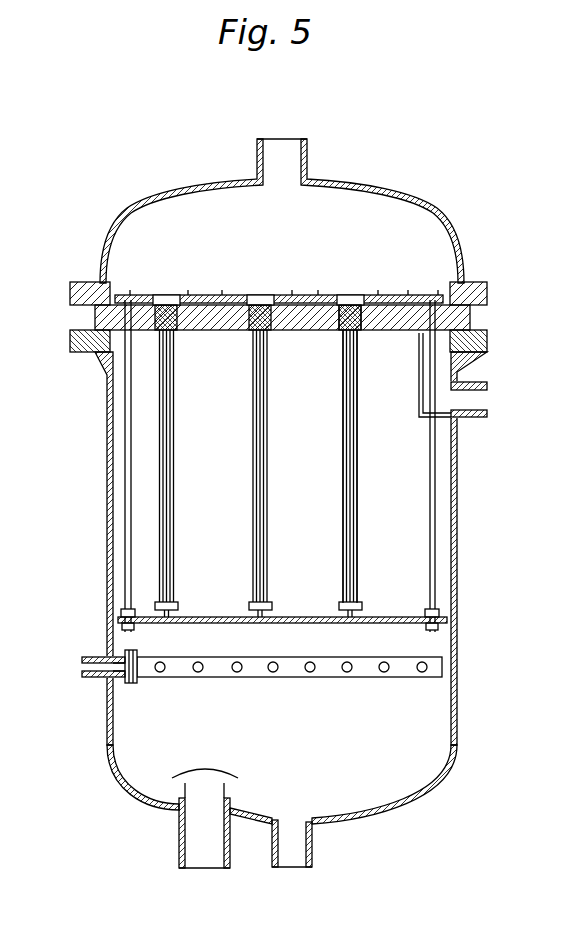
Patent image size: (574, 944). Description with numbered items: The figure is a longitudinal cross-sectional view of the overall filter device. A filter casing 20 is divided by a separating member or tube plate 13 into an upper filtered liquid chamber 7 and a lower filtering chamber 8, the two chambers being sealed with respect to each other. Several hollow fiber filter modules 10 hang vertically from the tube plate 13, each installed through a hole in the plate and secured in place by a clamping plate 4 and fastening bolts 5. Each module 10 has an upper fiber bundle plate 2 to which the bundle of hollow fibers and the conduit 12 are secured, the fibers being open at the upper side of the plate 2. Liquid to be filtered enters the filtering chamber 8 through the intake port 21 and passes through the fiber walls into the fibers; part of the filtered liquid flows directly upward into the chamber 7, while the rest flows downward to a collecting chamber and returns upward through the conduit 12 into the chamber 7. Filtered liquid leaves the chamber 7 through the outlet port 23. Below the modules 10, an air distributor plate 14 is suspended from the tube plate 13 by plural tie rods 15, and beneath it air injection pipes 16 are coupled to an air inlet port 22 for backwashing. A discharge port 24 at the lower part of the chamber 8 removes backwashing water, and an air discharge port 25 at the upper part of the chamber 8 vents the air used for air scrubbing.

The upper fiber bundle plate 2 is at (366, 318).
The clamping plate 4 is at (416, 294).
The fastening bolts 5 is at (143, 294).
The filtered liquid chamber 7 is at (344, 236).
The filtering chamber 8 is at (397, 410).
The hollow fiber filter module 10 is at (362, 544).
The conduit 12 is at (357, 466).
The tube plate 13 is at (482, 316).
The air distributor plate 14 is at (210, 616).
The tie rods 15 is at (440, 545).
The air injection pipes 16 is at (320, 679).
The filter casing 20 is at (104, 455).
The intake port 21 is at (205, 885).
The air inlet port 22 is at (76, 668).
The outlet port 23 is at (285, 163).
The discharge port 24 is at (295, 850).
The air discharge port 25 is at (470, 400).